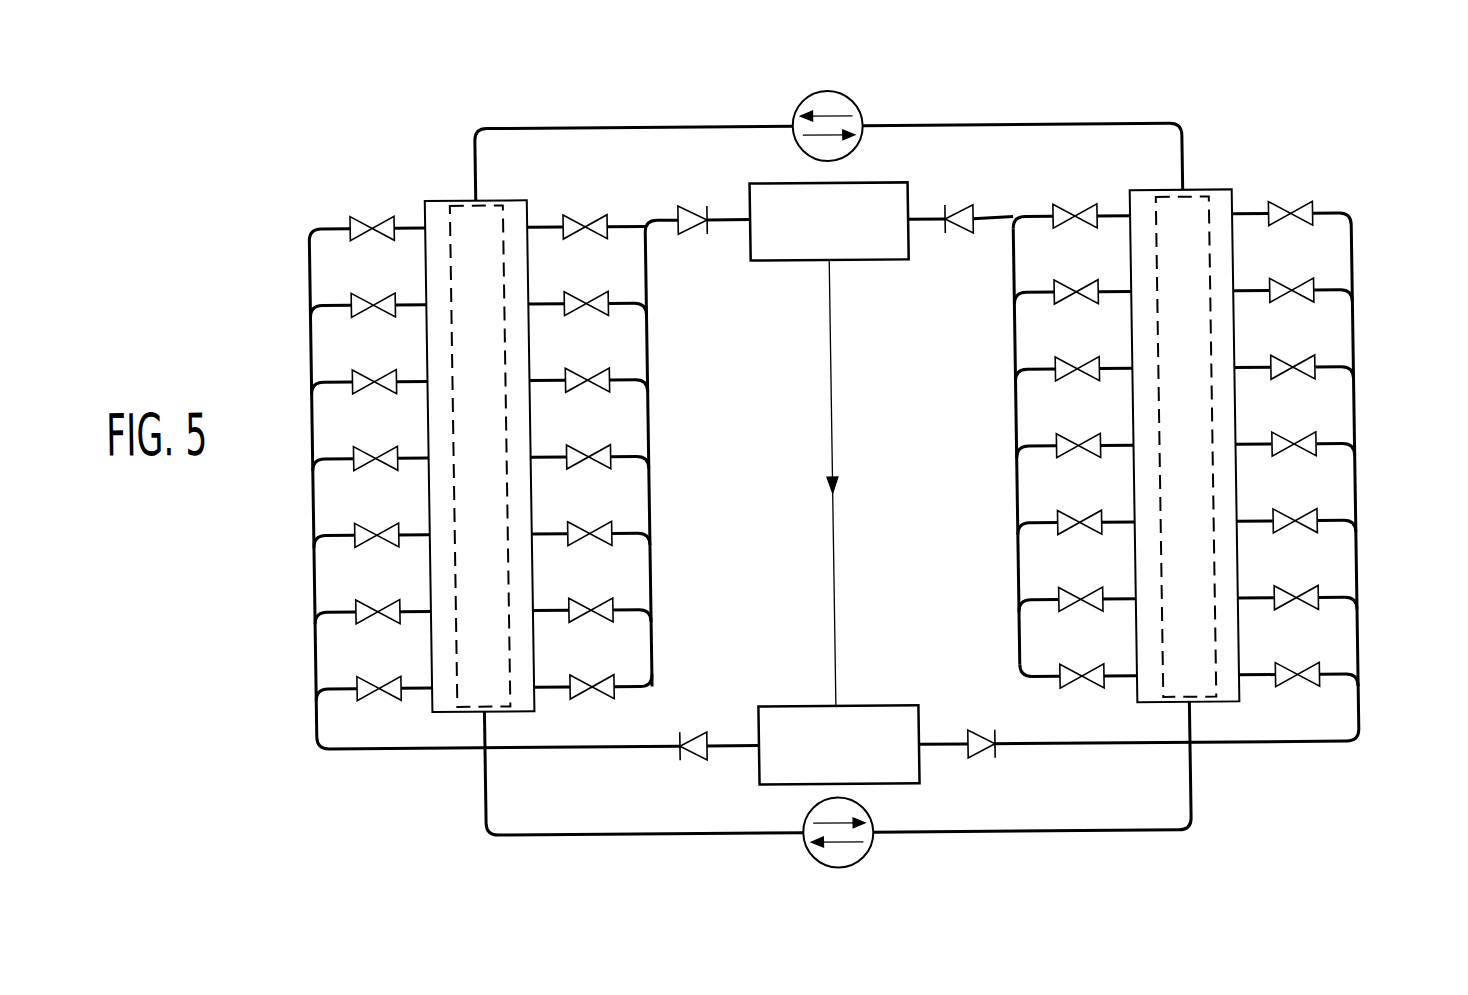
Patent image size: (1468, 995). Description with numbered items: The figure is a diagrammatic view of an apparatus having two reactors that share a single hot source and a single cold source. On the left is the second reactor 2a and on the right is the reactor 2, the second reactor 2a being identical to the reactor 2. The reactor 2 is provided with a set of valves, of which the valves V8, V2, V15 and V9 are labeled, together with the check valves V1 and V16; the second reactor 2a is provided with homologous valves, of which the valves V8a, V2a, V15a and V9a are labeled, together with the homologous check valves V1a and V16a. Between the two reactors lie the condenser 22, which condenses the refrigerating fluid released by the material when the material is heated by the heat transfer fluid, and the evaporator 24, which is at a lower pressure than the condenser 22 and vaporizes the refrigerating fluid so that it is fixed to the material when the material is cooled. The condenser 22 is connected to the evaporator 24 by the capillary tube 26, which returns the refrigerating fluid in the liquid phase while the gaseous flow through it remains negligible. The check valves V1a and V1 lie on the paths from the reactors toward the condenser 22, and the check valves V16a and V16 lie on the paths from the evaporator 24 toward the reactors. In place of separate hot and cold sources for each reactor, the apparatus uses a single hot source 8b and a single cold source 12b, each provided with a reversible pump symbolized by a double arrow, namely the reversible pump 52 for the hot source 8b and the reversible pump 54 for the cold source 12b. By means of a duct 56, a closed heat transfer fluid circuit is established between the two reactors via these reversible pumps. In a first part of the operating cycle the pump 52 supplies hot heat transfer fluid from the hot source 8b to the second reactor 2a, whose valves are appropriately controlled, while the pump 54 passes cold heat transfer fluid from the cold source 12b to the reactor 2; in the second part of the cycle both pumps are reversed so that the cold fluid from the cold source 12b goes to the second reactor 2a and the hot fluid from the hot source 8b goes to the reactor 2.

The second reactor 2a is at (416, 188).
The reactor 2 is at (1250, 181).
The valve V8a is at (358, 220).
The valve V2a is at (368, 693).
The valve V15a is at (576, 212).
The valve V9a is at (604, 678).
The valve V8 is at (1085, 213).
The valve V2 is at (1066, 669).
The valve V15 is at (1305, 211).
The valve V9 is at (1311, 676).
The check valve V1a is at (708, 240).
The check valve V1 is at (968, 240).
The check valve V16a is at (686, 758).
The check valve V16 is at (981, 756).
The condenser 22 is at (810, 205).
The evaporator 24 is at (866, 720).
The capillary tube 26 is at (832, 442).
The hot source 8b is at (808, 100).
The duct 56 is at (1036, 125).
The reversible pump 52 is at (841, 114).
The cold source 12b is at (800, 860).
The reversible pump 54 is at (849, 845).